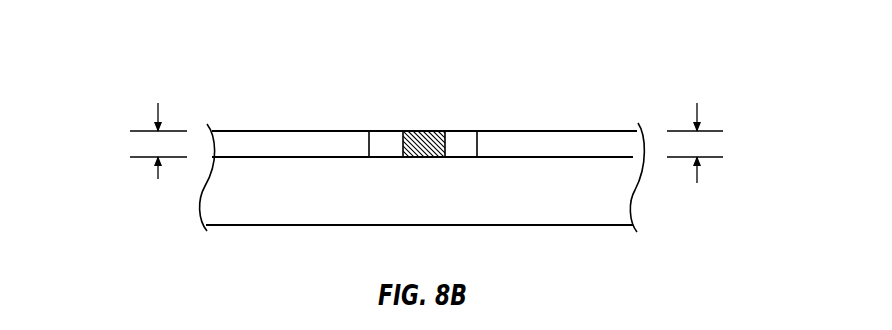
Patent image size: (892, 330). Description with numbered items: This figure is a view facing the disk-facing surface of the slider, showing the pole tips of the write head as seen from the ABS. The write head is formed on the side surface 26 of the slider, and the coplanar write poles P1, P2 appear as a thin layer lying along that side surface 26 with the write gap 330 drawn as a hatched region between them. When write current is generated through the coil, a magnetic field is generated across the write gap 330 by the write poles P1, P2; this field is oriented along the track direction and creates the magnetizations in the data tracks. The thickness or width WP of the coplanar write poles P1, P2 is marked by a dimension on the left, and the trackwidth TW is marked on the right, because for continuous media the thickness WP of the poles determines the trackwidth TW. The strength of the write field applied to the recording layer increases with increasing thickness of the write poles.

The side surface 26 is at (560, 142).
The write pole P1 is at (387, 138).
The write pole P2 is at (462, 138).
The write gap 330 is at (420, 130).
The air bearing surface ABS is at (550, 212).
The thickness or width of the write poles WP is at (139, 141).
The trackwidth TW is at (712, 143).